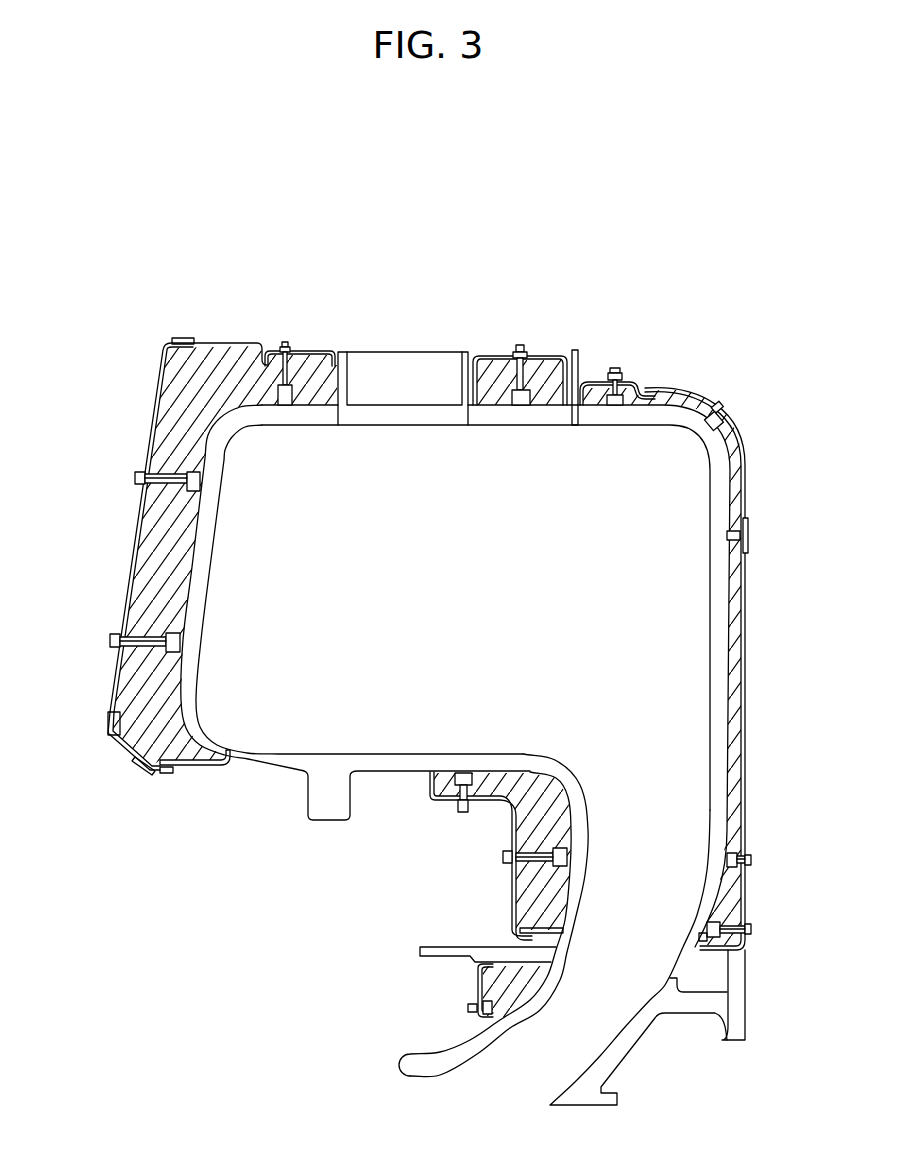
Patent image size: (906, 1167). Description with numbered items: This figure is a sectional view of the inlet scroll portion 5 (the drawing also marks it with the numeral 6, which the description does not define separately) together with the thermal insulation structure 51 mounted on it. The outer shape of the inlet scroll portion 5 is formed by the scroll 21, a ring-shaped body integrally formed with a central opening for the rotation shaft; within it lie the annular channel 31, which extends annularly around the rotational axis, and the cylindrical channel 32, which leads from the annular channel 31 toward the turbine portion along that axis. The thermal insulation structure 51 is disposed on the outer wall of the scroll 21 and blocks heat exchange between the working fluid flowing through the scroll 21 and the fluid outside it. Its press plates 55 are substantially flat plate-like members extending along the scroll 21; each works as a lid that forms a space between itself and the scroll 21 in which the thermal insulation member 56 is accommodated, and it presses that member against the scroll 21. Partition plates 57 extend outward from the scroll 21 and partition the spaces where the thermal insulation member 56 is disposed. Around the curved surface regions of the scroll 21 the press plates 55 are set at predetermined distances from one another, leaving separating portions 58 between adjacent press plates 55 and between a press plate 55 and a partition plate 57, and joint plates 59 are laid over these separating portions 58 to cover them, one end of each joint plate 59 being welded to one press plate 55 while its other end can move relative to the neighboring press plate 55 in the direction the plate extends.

The inlet scroll portion 5 is at (427, 583).
The window frame unit 6 is at (136, 242).
The scroll 21 is at (208, 517).
The annular channel 31 is at (464, 609).
The cylindrical channel 32 is at (610, 1013).
The thermal insulation structure 51 is at (150, 424).
The press plate 55 is at (132, 567).
The thermal insulation member 56 is at (178, 578).
The partition plate 57 is at (576, 350).
The separating portion 58 is at (171, 340).
The joint plate 59 is at (162, 346).